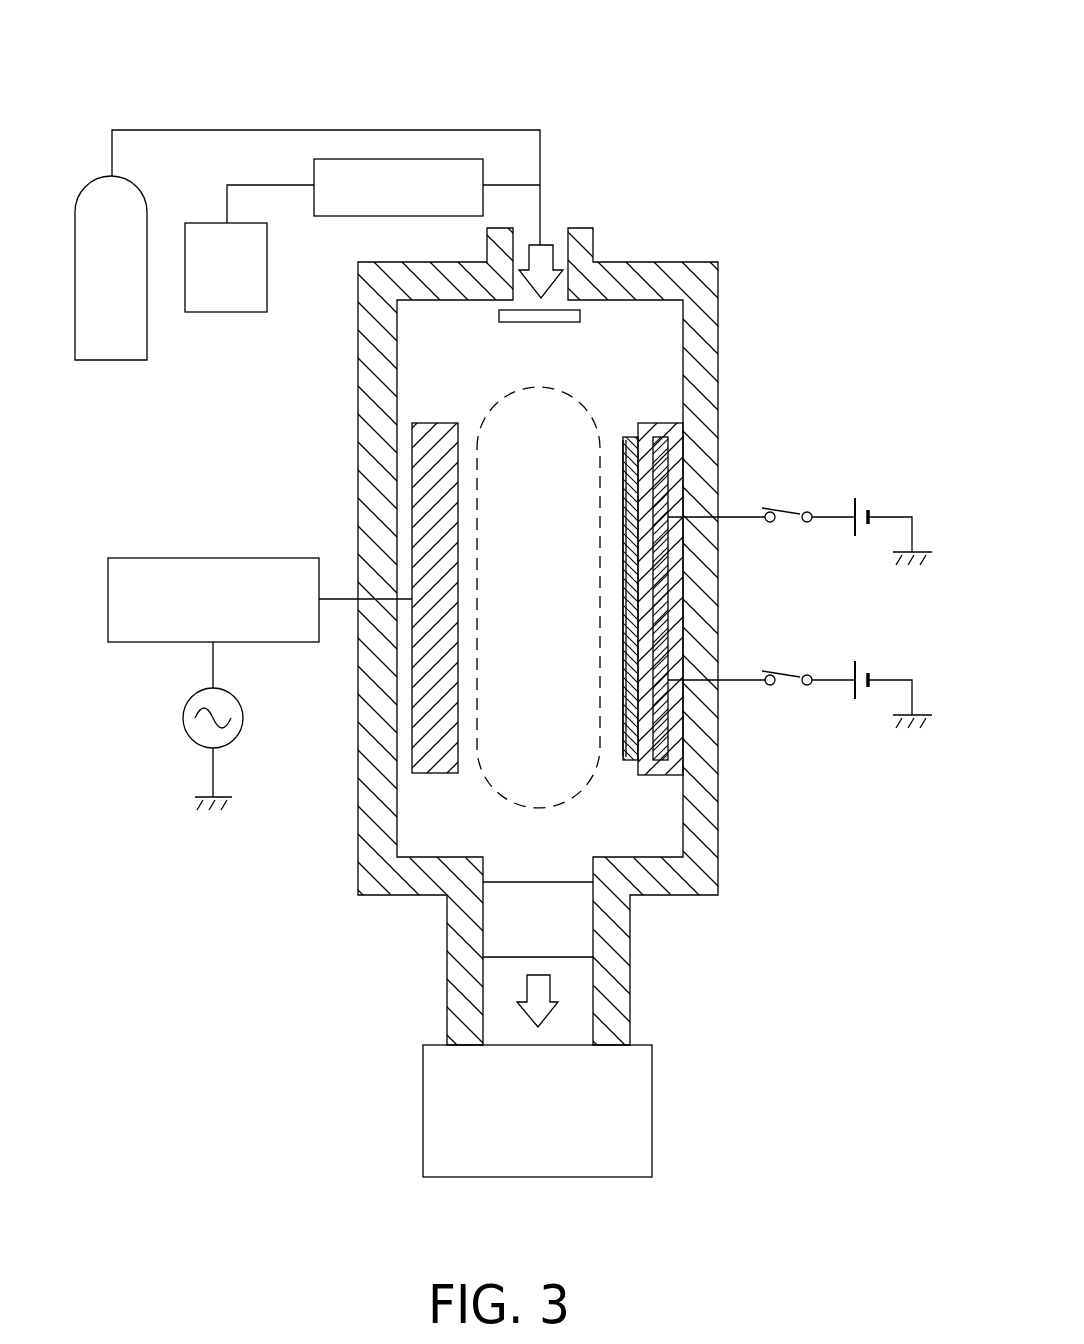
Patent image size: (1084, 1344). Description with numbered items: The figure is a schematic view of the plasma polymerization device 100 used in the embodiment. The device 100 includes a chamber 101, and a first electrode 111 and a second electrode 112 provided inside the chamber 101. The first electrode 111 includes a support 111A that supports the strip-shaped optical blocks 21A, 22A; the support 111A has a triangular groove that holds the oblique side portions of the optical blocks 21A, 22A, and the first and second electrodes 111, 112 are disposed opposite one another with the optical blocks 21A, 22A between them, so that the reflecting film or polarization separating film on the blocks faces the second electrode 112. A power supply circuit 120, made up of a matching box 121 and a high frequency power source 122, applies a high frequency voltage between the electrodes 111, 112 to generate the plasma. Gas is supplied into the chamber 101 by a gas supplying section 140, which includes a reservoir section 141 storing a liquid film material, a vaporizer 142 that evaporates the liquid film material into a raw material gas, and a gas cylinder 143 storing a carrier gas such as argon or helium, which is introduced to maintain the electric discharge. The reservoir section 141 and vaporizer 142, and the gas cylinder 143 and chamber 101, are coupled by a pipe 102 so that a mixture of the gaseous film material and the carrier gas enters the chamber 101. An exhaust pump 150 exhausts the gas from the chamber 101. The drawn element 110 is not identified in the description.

The plasma polymerization device 100 is at (604, 583).
The chamber 101 is at (365, 405).
The pipe 102 is at (263, 128).
The workpiece (lens) 110 is at (570, 550).
The first electrode 111 is at (691, 573).
The support 111A is at (627, 491).
The second electrode 112 is at (423, 709).
The power supply circuit 120 is at (259, 640).
The matching box 121 is at (137, 640).
The high frequency power source 122 is at (182, 730).
The gas supplying section 140 is at (310, 216).
The reservoir section 141 is at (232, 307).
The vaporizer 142 is at (422, 160).
The gas cylinder 143 is at (113, 353).
The exhaust pump 150 is at (647, 1107).
The strip-shaped optical block 21A is at (627, 515).
The strip-shaped optical block 22A is at (560, 715).